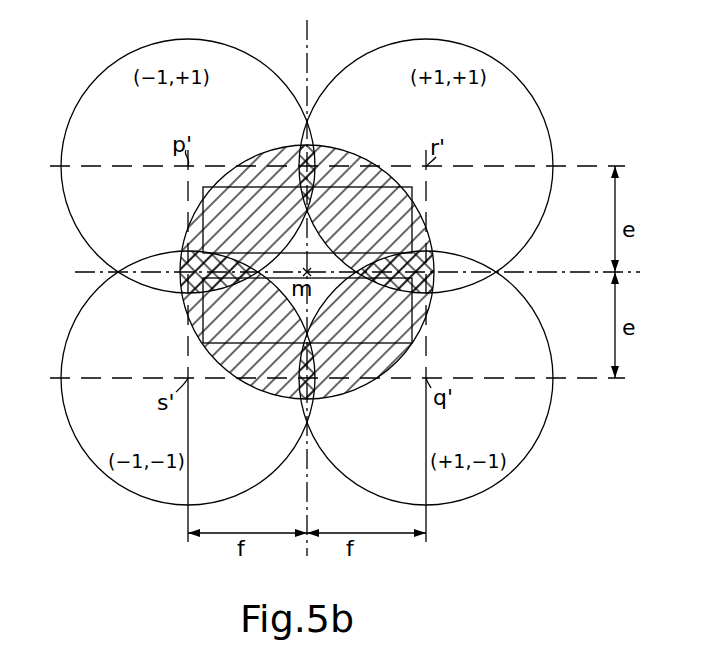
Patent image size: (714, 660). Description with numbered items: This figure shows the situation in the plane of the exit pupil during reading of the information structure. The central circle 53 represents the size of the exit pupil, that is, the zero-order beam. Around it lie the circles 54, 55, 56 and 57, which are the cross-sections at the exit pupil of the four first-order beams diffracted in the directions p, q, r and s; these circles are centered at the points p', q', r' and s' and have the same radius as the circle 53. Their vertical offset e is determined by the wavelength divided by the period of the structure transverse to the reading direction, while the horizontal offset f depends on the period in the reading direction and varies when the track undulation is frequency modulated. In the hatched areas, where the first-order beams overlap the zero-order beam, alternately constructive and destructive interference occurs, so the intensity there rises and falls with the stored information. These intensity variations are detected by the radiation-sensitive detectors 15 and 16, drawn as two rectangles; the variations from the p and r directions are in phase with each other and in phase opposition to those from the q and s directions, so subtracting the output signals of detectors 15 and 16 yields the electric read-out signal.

The central circle 53 is at (352, 154).
The circle 54 is at (67, 204).
The circle 55 is at (534, 445).
The circle 56 is at (548, 131).
The circle 57 is at (64, 409).
The radiation-sensitive detector 16 is at (386, 225).
The radiation-sensitive detector 15 is at (386, 320).